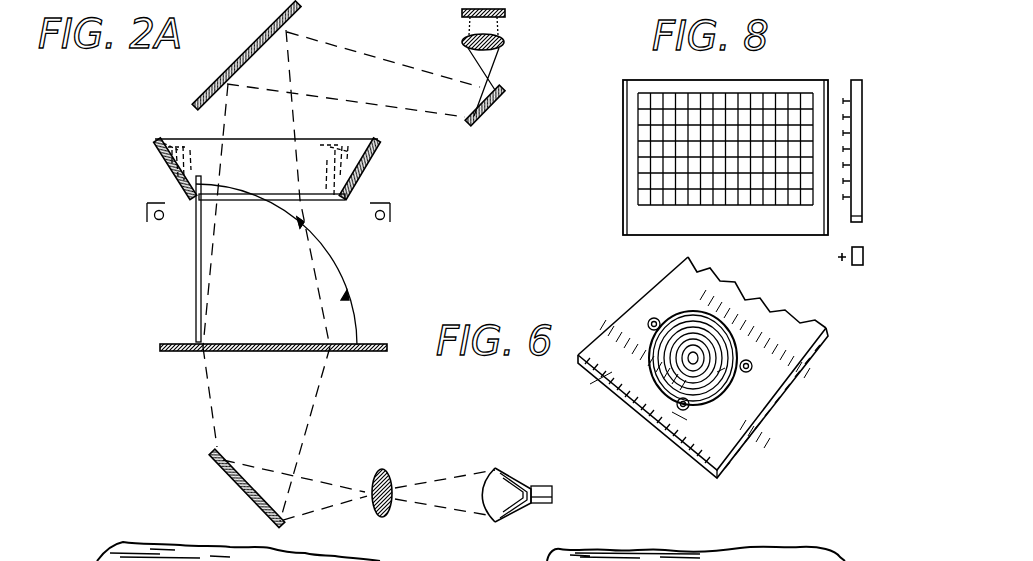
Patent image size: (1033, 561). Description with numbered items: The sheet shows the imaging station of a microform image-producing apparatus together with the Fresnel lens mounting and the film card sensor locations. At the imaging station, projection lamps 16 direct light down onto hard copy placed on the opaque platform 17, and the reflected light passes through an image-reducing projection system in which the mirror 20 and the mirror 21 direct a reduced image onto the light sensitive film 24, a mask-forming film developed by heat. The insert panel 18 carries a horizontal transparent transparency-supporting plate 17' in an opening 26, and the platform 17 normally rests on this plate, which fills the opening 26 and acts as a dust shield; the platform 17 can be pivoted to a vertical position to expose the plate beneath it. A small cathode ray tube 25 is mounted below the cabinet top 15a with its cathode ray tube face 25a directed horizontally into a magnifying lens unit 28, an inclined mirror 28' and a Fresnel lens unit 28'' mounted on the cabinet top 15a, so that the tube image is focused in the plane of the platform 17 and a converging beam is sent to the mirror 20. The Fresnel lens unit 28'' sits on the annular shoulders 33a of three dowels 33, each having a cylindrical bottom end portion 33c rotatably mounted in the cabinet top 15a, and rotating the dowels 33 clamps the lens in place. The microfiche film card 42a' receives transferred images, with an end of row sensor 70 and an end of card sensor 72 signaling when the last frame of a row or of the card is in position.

In FIG. 6, the cabinet top 15a is at (680, 292).
In FIG. 2A, the projection lamps 16 is at (152, 224).
In FIG. 2A, the platform 17 is at (245, 259).
In FIG. 6, the transparent transparency-supporting plate 17' is at (731, 376).
In FIG. 2A, the insert panel 18 is at (620, 560).
In FIG. 2A, the mirror 20 is at (222, 92).
In FIG. 2A, the mirror 21 is at (487, 112).
In FIG. 2A, the light sensitive film 24 is at (490, 8).
In FIG. 2A, the cathode ray tube 25 is at (504, 482).
In FIG. 2A, the cathode ray tube face 25a is at (488, 497).
In FIG. 2A, the opening 26 is at (302, 560).
In FIG. 6, the opening 26 is at (720, 305).
In FIG. 2A, the magnifying lens unit 28 is at (409, 479).
In FIG. 2A, the inclined mirror 28' is at (222, 488).
In FIG. 2A, the Fresnel lens unit 28'' is at (273, 366).
In FIG. 6, the dowels 33 is at (648, 318).
In FIG. 6, the annular shoulders 33a is at (605, 376).
In FIG. 6, the cylindrical bottom end portion 33c is at (717, 372).
In FIG. 8, the microfiche film card 42a' is at (740, 135).
In FIG. 8, the end of row sensor 70 is at (858, 78).
In FIG. 8, the end of card sensor 72 is at (860, 265).